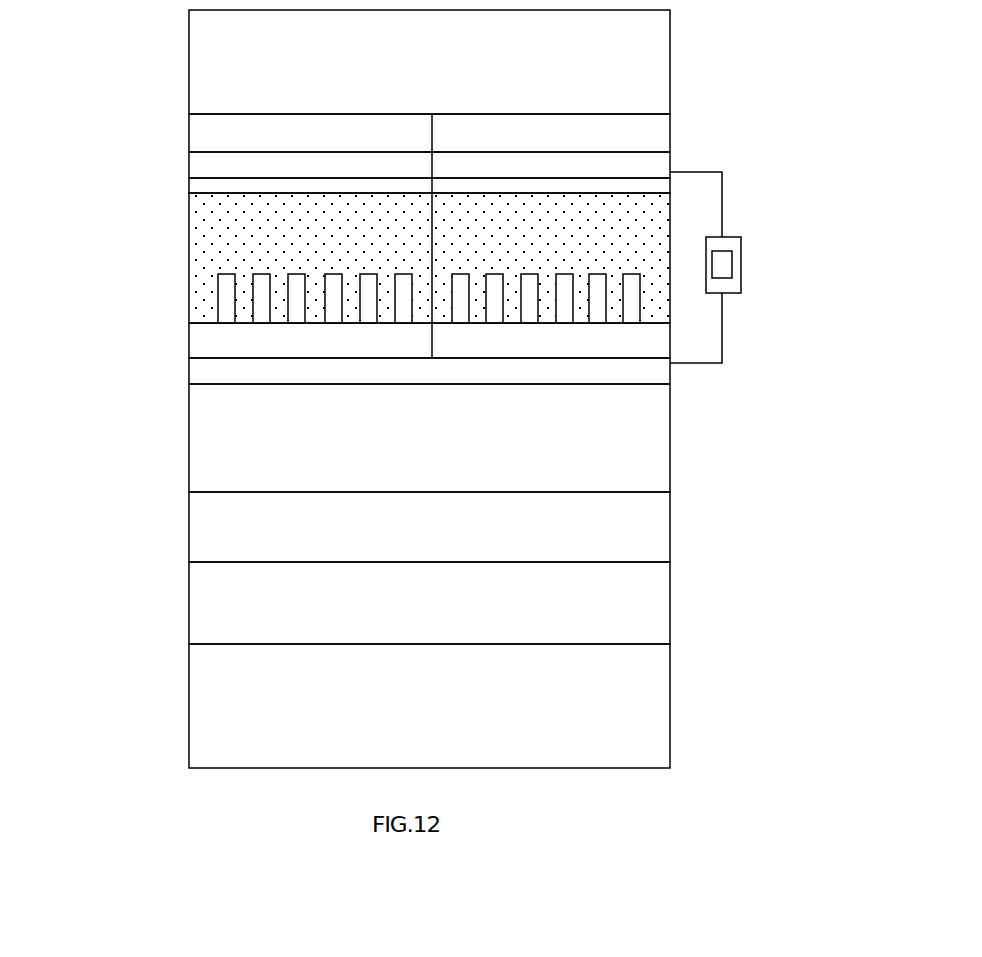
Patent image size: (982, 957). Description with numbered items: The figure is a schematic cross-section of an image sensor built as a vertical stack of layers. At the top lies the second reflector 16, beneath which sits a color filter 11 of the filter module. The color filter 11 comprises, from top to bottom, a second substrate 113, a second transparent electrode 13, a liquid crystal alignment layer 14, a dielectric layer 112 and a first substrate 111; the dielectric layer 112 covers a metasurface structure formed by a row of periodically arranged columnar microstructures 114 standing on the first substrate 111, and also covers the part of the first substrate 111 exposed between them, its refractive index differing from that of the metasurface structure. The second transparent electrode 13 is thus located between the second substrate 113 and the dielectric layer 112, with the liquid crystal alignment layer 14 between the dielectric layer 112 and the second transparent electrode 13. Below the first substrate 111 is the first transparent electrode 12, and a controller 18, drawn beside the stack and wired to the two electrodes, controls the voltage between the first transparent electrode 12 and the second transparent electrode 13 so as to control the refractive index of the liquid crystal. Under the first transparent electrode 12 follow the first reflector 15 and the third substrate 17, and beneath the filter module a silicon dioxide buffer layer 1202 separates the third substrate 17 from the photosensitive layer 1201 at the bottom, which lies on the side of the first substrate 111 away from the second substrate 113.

The second reflector 16 is at (665, 42).
The color filter 11 is at (74, 132).
The second substrate 113 is at (206, 132).
The second transparent electrode 13 is at (665, 162).
The liquid crystal alignment layer 14 is at (665, 187).
The dielectric layer 112 is at (206, 246).
The microstructure 114 is at (212, 302).
The first substrate 111 is at (206, 342).
The controller 18 is at (725, 265).
The first transparent electrode 12 is at (665, 380).
The first reflector 15 is at (665, 449).
The third substrate 17 is at (665, 534).
The buffer layer 1202 is at (665, 610).
The photosensitive layer 1201 is at (665, 724).